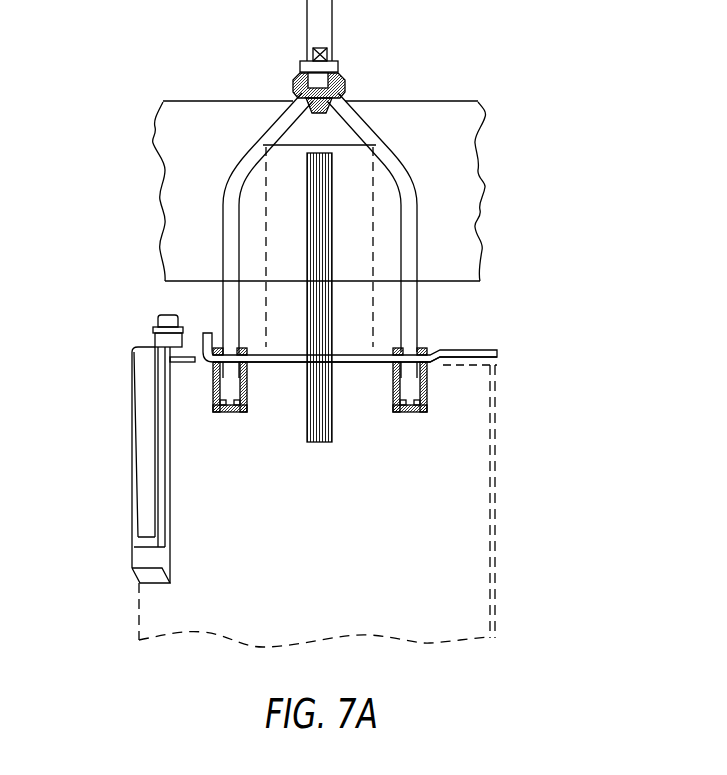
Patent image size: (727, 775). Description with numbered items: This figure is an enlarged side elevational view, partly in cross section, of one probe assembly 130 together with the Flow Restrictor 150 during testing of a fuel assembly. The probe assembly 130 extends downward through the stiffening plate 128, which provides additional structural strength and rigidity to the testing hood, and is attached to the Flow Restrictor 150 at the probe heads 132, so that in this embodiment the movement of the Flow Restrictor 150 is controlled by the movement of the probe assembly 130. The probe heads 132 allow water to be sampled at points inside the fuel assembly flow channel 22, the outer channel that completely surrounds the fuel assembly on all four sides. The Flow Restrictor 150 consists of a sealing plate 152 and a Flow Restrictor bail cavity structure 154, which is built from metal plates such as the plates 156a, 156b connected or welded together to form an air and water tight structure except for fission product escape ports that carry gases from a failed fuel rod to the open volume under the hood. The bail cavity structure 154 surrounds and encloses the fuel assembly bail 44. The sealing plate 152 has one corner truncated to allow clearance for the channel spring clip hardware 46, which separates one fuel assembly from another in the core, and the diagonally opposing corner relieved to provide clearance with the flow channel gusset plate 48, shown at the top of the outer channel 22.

The outer channel 22 is at (497, 578).
The fuel assembly bail 44 is at (305, 248).
The channel spring clip hardware 46 is at (130, 380).
The flow channel gusset plate 48 is at (462, 366).
The stiffening plate 128 is at (468, 157).
The probe assembly 130 is at (347, 88).
The probe head 132 is at (213, 382).
The Flow Restrictor 150 is at (377, 307).
The sealing plate 152 is at (353, 363).
The Flow Restrictor bail cavity structure 154 is at (332, 252).
The metal plate 156a is at (262, 308).
The metal plate 156b is at (405, 205).